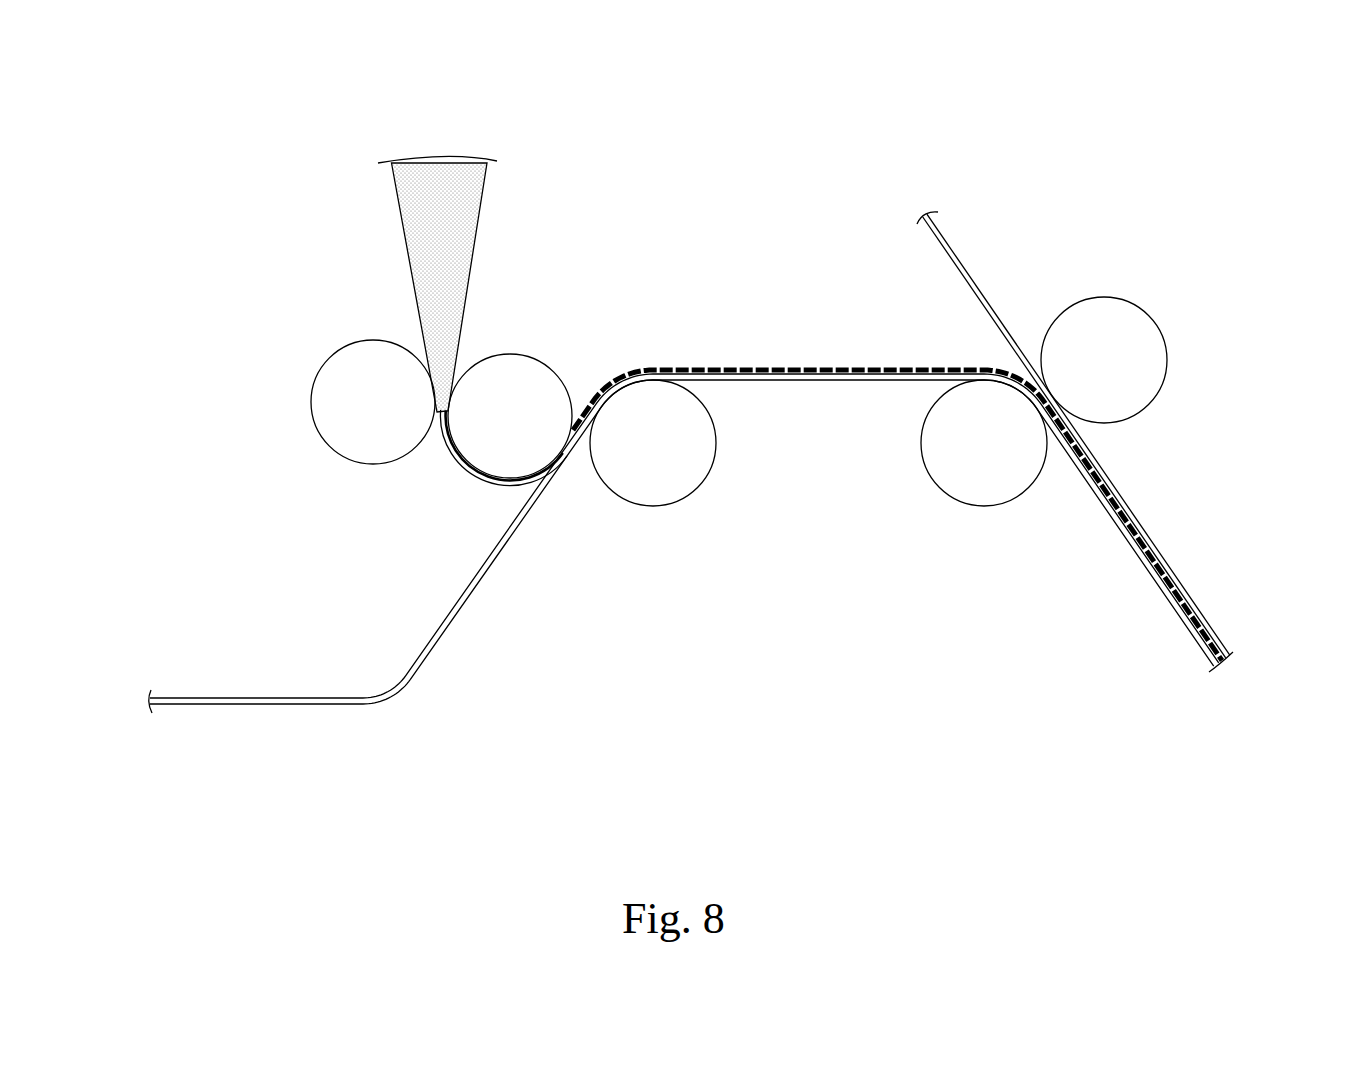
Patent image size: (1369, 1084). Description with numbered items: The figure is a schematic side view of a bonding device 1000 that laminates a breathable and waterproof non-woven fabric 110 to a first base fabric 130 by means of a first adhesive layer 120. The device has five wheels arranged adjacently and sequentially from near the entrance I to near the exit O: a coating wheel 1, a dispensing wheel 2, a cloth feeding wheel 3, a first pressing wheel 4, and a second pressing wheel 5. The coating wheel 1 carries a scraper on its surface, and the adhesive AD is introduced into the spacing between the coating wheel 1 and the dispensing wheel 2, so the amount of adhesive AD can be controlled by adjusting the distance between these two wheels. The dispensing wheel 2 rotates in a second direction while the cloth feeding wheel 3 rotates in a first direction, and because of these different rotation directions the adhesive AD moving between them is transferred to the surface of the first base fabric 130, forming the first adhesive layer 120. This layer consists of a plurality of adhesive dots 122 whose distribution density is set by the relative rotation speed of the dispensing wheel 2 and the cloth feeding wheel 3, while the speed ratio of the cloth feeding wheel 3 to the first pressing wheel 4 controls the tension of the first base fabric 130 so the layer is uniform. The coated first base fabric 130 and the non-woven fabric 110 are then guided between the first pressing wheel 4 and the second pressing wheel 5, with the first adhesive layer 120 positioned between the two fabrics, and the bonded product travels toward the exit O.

The bonding device 1000 is at (190, 82).
The coating wheel 1 is at (365, 416).
The dispensing wheel 2 is at (501, 431).
The cloth feeding wheel 3 is at (645, 459).
The first pressing wheel 4 is at (976, 459).
The second pressing wheel 5 is at (1096, 376).
The adhesive AD is at (457, 239).
The breathable and waterproof non-woven fabric 110 is at (1143, 533).
The first adhesive layer 120 is at (939, 515).
The adhesive dots 122 is at (1157, 543).
The first base fabric 130 is at (1183, 596).
The entrance I is at (128, 689).
The exit O is at (1243, 689).